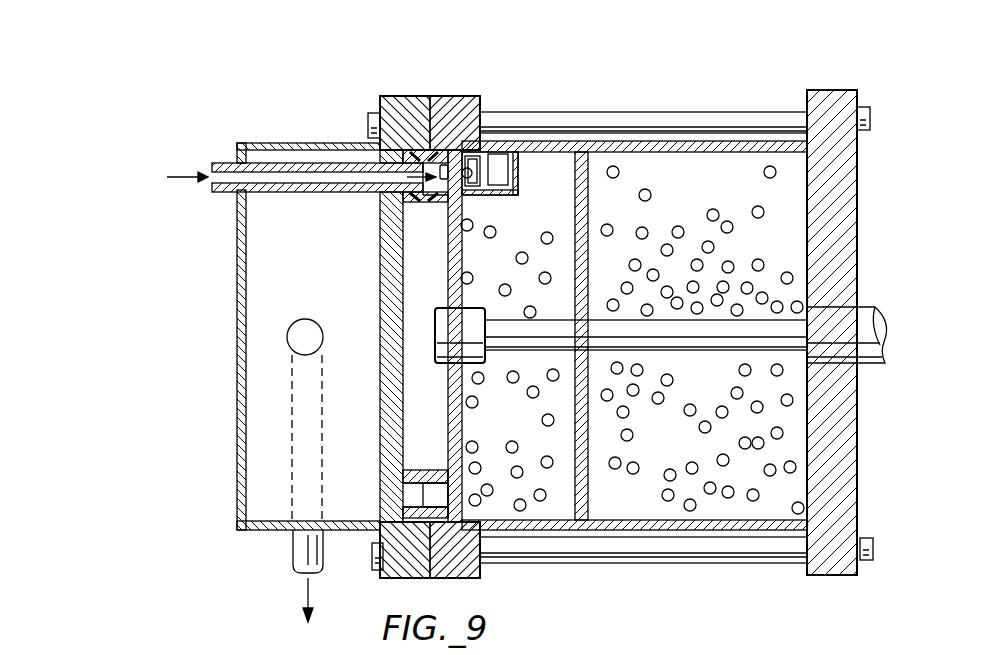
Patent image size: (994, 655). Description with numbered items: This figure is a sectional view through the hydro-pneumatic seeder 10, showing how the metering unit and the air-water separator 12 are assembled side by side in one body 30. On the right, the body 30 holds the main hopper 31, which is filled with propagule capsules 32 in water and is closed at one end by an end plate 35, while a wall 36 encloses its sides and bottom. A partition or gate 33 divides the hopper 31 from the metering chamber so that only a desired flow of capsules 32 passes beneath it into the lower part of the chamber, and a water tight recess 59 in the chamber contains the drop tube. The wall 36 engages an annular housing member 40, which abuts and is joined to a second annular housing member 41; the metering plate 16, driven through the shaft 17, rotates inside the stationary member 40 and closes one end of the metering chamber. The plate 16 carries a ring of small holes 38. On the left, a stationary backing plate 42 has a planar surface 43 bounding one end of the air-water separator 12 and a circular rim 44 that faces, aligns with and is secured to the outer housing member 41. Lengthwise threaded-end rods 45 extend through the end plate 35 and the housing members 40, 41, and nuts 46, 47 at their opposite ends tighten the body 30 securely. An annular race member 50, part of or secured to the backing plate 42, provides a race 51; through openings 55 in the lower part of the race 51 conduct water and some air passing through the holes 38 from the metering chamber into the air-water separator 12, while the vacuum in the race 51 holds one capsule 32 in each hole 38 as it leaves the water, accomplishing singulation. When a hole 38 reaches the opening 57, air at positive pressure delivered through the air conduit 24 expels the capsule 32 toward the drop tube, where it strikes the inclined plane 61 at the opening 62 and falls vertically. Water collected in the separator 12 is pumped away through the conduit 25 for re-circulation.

The hydro-pneumatic seeder 10 is at (575, 84).
The air-water separator 12 is at (296, 128).
The metering plate 16 is at (463, 252).
The shaft 17 is at (735, 352).
The positive-pressure air conduit 24 is at (222, 161).
The conduit 25 is at (293, 557).
The body 30 is at (704, 124).
The main hopper 31 is at (716, 187).
The propagule capsules 32 is at (474, 180).
The partition or gate 33 is at (590, 492).
The end plate 35 is at (858, 156).
The wall 36 is at (664, 140).
The holes 38 is at (462, 100).
The annular housing member 40 is at (452, 95).
The annular housing member 41 is at (380, 100).
The backing plate 42 is at (380, 290).
The planar surface 43 is at (380, 355).
The circular rim 44 is at (398, 95).
The threaded-end rods 45 is at (607, 117).
The nut 46 is at (871, 117).
The nut 47 is at (367, 125).
The annular race member 50 is at (393, 218).
The race 51 is at (425, 207).
The through openings 55 is at (383, 496).
The opening 57 is at (433, 95).
The water tight recess 59 is at (518, 187).
The inclined plane 61 is at (500, 162).
The opening 62 is at (490, 153).